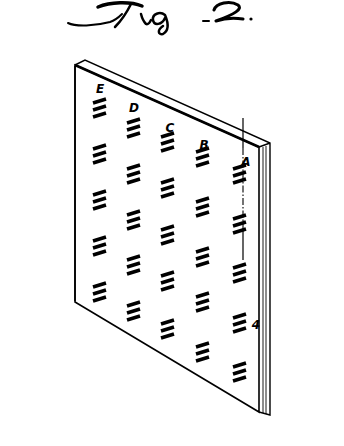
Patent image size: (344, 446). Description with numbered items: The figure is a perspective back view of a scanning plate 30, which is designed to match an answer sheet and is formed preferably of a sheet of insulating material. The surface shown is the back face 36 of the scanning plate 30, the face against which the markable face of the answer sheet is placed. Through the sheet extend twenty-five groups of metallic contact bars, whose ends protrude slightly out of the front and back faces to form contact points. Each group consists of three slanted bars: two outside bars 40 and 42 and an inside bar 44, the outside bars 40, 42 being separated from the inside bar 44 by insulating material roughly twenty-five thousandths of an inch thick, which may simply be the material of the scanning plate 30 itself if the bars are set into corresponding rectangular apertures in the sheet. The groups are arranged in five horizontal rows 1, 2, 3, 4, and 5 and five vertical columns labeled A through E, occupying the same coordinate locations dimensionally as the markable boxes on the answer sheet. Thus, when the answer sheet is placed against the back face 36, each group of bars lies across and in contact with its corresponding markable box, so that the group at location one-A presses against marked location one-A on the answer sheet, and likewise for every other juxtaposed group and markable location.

The scanning plate 30 is at (213, 384).
The back face 36 is at (90, 268).
The row 4 is at (244, 258).
The outside bar 40 is at (243, 317).
The inside bar 44 is at (247, 328).
The outside bar 42 is at (247, 337).
The row 1 is at (244, 177).
The row 2 is at (244, 226).
The row 3 is at (244, 275).
The row 5 is at (247, 375).